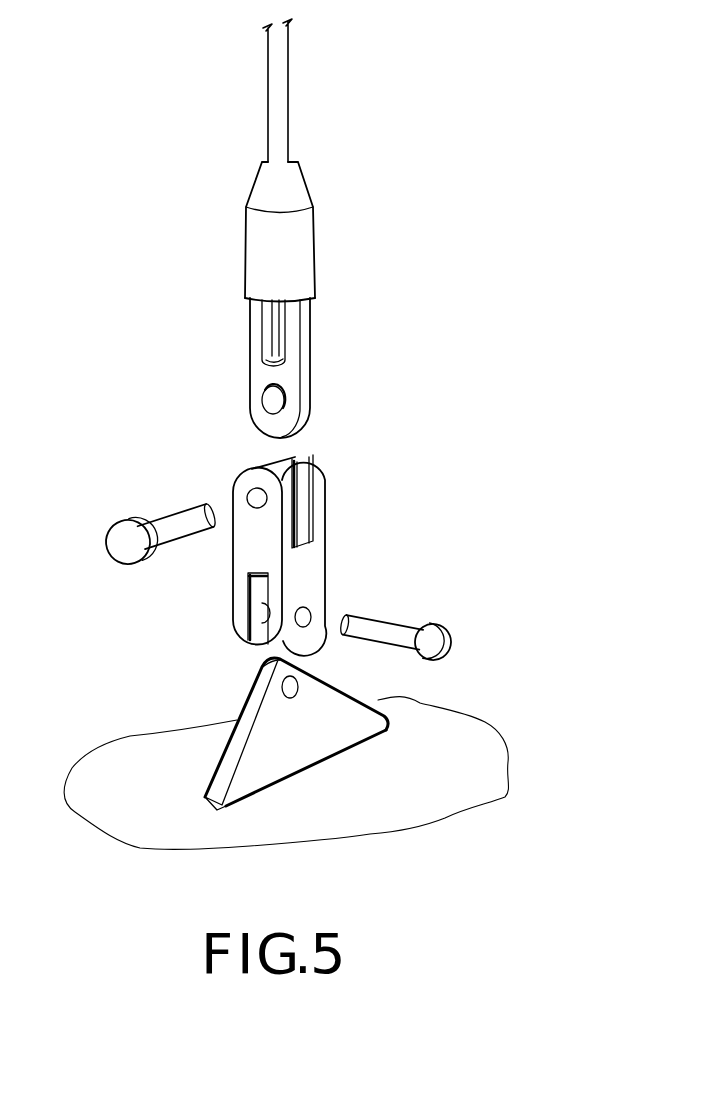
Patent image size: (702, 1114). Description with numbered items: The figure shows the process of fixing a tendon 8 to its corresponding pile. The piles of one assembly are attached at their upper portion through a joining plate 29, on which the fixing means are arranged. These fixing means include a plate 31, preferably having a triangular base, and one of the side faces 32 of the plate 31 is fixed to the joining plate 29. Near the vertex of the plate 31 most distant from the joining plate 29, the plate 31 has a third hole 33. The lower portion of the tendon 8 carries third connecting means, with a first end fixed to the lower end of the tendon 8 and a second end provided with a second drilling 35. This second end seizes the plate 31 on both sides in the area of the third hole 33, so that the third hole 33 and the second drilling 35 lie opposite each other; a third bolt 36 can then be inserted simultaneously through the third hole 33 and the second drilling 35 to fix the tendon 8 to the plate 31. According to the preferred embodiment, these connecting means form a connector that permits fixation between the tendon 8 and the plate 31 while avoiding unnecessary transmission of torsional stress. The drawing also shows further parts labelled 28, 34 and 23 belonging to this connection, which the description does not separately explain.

The tendon 8 is at (277, 110).
The second drilling 35 is at (263, 400).
The pin 28 is at (127, 507).
The third bolt 36 is at (127, 541).
The third hole 33 is at (199, 582).
The link 34 is at (296, 653).
The pin 23 is at (385, 622).
The plate 31 is at (259, 772).
The side face 32 is at (299, 776).
The joining plate 29 is at (470, 756).